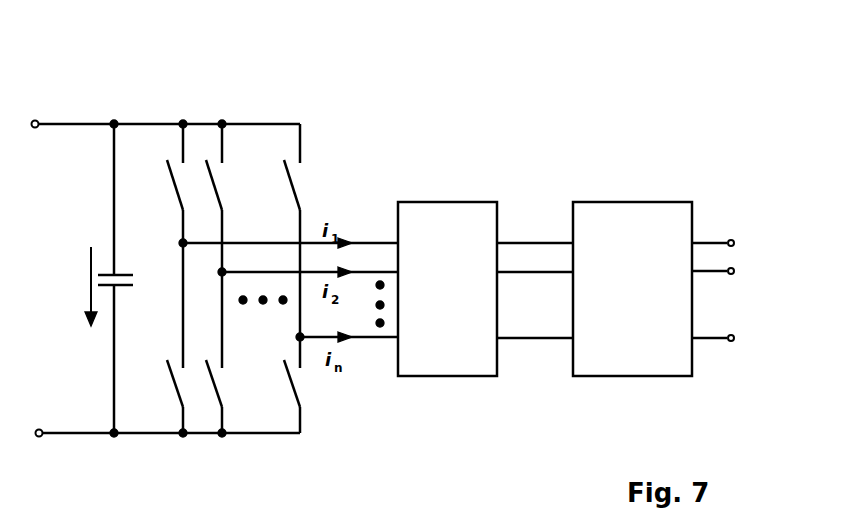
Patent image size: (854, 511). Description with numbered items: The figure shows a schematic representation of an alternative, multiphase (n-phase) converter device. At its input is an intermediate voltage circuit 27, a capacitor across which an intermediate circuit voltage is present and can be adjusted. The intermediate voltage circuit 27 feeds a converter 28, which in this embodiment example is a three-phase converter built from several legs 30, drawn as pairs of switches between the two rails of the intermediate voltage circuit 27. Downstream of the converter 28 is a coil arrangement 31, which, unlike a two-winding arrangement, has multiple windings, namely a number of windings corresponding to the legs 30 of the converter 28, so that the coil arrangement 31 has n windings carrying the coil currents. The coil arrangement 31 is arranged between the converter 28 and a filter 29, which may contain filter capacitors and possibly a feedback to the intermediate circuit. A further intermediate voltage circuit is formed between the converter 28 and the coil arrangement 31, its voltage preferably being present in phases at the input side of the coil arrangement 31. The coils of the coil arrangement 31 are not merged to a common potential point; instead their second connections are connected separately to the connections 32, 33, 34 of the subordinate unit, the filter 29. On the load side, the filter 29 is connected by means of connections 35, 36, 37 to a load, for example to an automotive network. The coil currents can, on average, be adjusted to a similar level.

The intermediate voltage circuit 27 is at (111, 50).
The converter 28 is at (227, 225).
The filter 29 is at (594, 218).
The legs 30 is at (181, 142).
The coil arrangement 31 is at (442, 115).
The connection 32 is at (550, 244).
The connection 33 is at (550, 273).
The connection 34 is at (550, 340).
The connection 35 is at (712, 243).
The connection 36 is at (717, 271).
The connection 37 is at (717, 338).